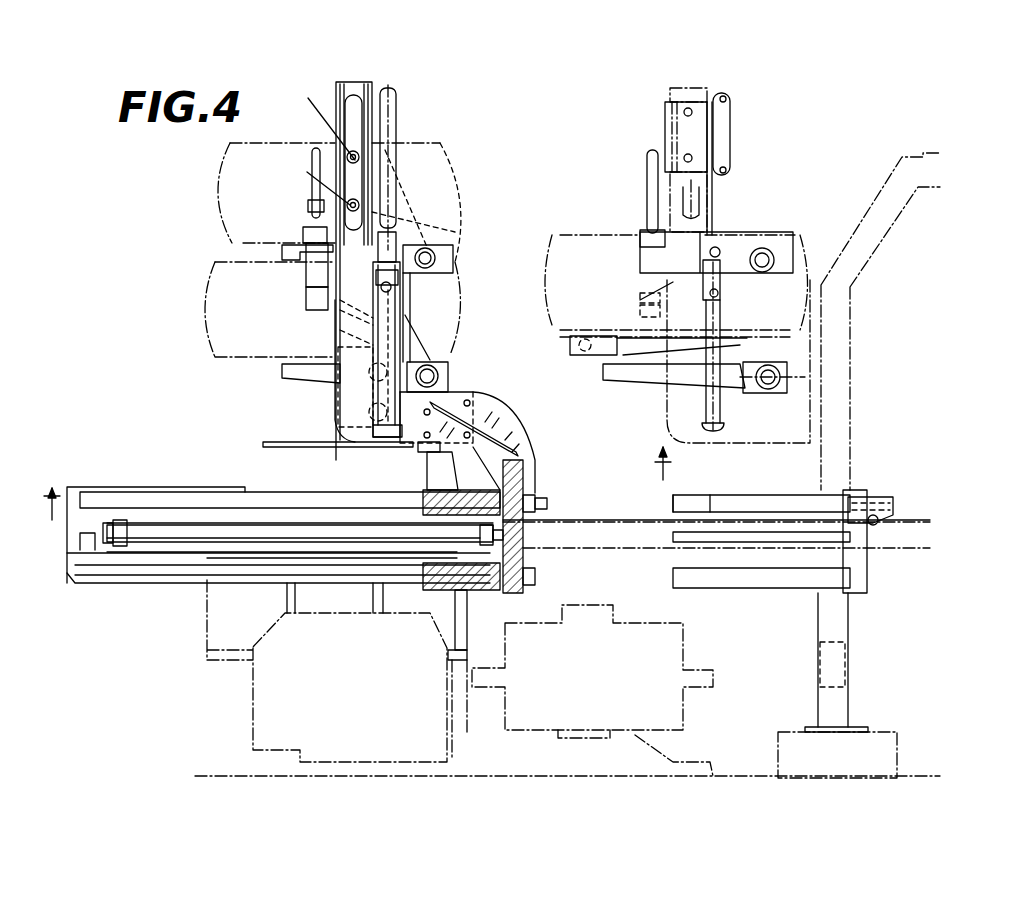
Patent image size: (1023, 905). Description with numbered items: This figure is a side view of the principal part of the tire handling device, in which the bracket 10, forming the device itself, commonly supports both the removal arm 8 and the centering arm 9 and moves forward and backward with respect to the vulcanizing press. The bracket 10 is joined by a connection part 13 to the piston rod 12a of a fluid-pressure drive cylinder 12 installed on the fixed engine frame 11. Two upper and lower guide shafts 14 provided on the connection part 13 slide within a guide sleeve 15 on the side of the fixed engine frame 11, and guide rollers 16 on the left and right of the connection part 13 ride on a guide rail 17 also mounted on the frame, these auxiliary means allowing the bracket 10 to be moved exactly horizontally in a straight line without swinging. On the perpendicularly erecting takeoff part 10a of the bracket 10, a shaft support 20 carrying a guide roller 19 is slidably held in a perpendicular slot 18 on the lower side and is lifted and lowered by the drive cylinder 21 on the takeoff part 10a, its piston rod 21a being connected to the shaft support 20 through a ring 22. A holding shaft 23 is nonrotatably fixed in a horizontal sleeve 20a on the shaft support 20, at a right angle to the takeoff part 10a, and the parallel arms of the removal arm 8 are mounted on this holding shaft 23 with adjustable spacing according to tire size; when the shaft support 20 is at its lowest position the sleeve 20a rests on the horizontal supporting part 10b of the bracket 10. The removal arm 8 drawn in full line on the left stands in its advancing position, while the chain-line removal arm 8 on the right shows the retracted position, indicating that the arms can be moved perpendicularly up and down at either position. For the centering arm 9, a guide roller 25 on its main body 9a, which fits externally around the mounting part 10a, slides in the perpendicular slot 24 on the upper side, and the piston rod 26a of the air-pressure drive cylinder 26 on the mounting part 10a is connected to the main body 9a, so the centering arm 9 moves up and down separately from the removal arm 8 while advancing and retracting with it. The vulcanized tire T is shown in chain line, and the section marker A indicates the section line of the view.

The removal arm 8 is at (455, 258).
The centering arm 9 is at (330, 146).
The main body 9a is at (380, 143).
The bracket 10 is at (335, 442).
The takeoff part 10a is at (360, 230).
The horizontal supporting part 10b is at (405, 442).
The fixed engine frame 11 is at (185, 595).
The drive cylinder 12 is at (258, 545).
The piston rod 12a is at (547, 503).
The connection part 13 is at (523, 462).
The guide shafts 14 is at (343, 495).
The guide sleeve 15 is at (470, 490).
The guide rollers 16 is at (895, 505).
The guide rail 17 is at (708, 495).
The slot 18 is at (370, 330).
The guide roller 19 is at (333, 405).
The shaft support 20 is at (432, 336).
The horizontal sleeve 20a is at (750, 345).
The drive cylinder 21 is at (405, 315).
The piston rod 21a is at (400, 247).
The ring 22 is at (440, 205).
The holding shaft 23 is at (438, 376).
The slot 24 is at (388, 108).
The guide roller 25 is at (758, 108).
The drive cylinder 26 is at (303, 235).
The piston rod 26a is at (305, 205).
The vulcanized tire T is at (212, 198).
The section line A is at (352, 490).